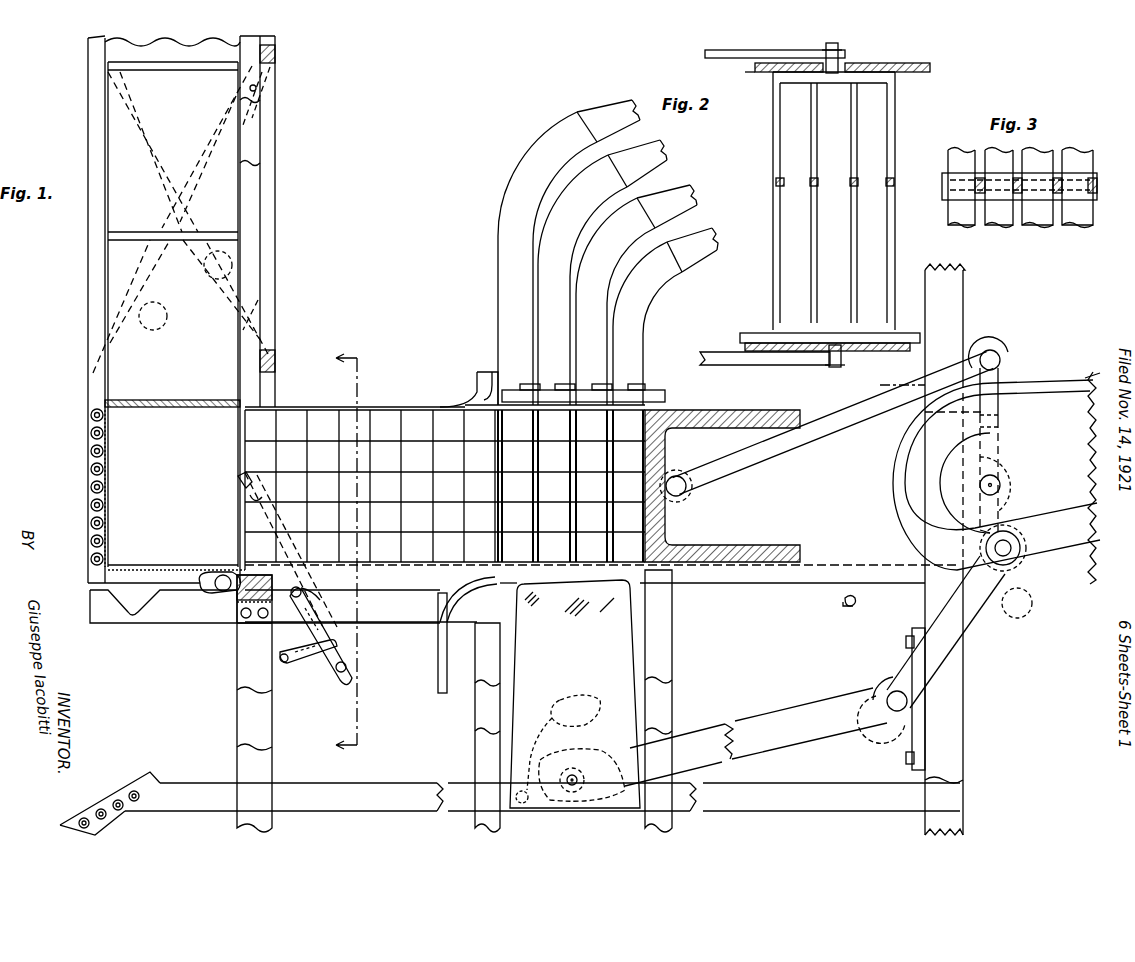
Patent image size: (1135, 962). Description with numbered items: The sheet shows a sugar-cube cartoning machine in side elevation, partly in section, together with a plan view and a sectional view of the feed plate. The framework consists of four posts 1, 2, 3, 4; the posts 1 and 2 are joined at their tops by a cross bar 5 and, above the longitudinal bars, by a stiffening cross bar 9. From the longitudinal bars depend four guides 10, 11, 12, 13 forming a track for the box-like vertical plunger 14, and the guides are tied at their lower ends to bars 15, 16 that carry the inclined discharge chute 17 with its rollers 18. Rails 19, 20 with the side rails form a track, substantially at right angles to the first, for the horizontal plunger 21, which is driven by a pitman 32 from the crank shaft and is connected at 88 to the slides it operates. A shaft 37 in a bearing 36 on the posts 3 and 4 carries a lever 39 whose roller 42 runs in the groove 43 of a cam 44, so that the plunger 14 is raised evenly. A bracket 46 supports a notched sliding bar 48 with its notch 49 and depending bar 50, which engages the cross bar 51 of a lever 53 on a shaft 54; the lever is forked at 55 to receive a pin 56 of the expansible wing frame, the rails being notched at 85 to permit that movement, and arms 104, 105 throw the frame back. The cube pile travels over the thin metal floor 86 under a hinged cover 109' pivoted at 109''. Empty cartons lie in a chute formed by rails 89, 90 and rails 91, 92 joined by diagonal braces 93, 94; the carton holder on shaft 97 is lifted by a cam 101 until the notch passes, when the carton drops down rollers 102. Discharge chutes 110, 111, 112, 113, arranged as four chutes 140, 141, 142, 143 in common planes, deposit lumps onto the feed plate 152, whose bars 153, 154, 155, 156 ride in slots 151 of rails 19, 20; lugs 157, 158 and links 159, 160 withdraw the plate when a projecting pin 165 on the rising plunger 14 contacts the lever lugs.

In FIG. 1, the post 1 is at (266, 334).
In FIG. 1, the post 2 is at (240, 670).
In FIG. 1, the post 3 is at (950, 762).
In FIG. 1, the post 4 is at (950, 700).
In FIG. 1, the cross bar 5 is at (277, 50).
In FIG. 1, the cross bar 9 is at (276, 364).
In FIG. 1, the guide 10 is at (480, 660).
In FIG. 1, the guide 11 is at (479, 700).
In FIG. 1, the guide 12 is at (672, 660).
In FIG. 1, the guide 13 is at (672, 694).
In FIG. 1, the vertical plunger 14 is at (672, 630).
In FIG. 1, the longitudinally extending bar 15 is at (456, 792).
In FIG. 1, the longitudinally extending bar 16 is at (365, 798).
In FIG. 1, the inclined chute 17 is at (120, 788).
In FIG. 1, the rollers 18 is at (100, 810).
In FIG. 1, the rail 19 is at (925, 340).
In FIG. 2, the rail 19 is at (905, 340).
In FIG. 1, the rail 20 is at (355, 542).
In FIG. 2, the rail 20 is at (915, 66).
In FIG. 1, the horizontal plunger 21 is at (792, 505).
In FIG. 1, the connection of slide to plunger 88 is at (808, 546).
In FIG. 1, the pitman 32 is at (866, 424).
In FIG. 1, the bearing 36 is at (912, 735).
In FIG. 1, the shaft 37 is at (893, 692).
In FIG. 1, the lever 39 is at (762, 722).
In FIG. 1, the roller 42 is at (1017, 603).
In FIG. 1, the groove 43 is at (1053, 393).
In FIG. 1, the cam 44 is at (987, 616).
In FIG. 1, the bracket 46 is at (238, 610).
In FIG. 1, the sliding bar 48 is at (720, 578).
In FIG. 1, the notch 49 is at (125, 620).
In FIG. 1, the depending bar 50 is at (440, 666).
In FIG. 1, the cross bar 51 is at (350, 668).
In FIG. 1, the lever 53 is at (332, 658).
In FIG. 1, the shaft 54 is at (318, 601).
In FIG. 1, the fork 55 is at (260, 497).
In FIG. 1, the pin 56 is at (240, 478).
In FIG. 1, the notch 85 is at (368, 566).
In FIG. 1, the thin metal floor 86 is at (416, 567).
In FIG. 1, the rail 89 is at (262, 87).
In FIG. 1, the rail 90 is at (262, 132).
In FIG. 1, the rail 91 is at (92, 205).
In FIG. 1, the rail 92 is at (88, 290).
In FIG. 1, the diagonal brace 93 is at (140, 300).
In FIG. 1, the diagonal brace 94 is at (218, 265).
In FIG. 1, the shaft 97 is at (224, 575).
In FIG. 1, the cam 101 is at (205, 580).
In FIG. 1, the rollers 102 is at (88, 450).
In FIG. 1, the arm 104 is at (285, 664).
In FIG. 1, the arm 105 is at (308, 658).
In FIG. 1, the hinged cover 109' is at (436, 389).
In FIG. 1, the pivot of hinged cover 109'' is at (473, 373).
In FIG. 1, the discharge chute 110 is at (547, 258).
In FIG. 1, the discharge chute 111 is at (582, 280).
In FIG. 1, the discharge chute 112 is at (615, 301).
In FIG. 1, the discharge chute 113 is at (647, 323).
In FIG. 1, the chute 140 is at (610, 118).
In FIG. 1, the chute 141 is at (640, 168).
In FIG. 1, the chute 142 is at (668, 212).
In FIG. 1, the chute 143 is at (696, 256).
In FIG. 2, the slot 151 is at (845, 80).
In FIG. 2, the feed plate 152 is at (896, 82).
In FIG. 2, the feed plate bar 153 is at (775, 132).
In FIG. 3, the feed plate bar 153 is at (975, 183).
In FIG. 2, the feed plate bar 154 is at (812, 157).
In FIG. 3, the feed plate bar 154 is at (1010, 190).
In FIG. 2, the feed plate bar 155 is at (875, 128).
In FIG. 3, the feed plate bar 155 is at (1053, 190).
In FIG. 2, the feed plate bar 156 is at (892, 136).
In FIG. 3, the feed plate bar 156 is at (1097, 186).
In FIG. 2, the lug 157 is at (838, 48).
In FIG. 2, the lug 158 is at (840, 366).
In FIG. 2, the link 159 is at (738, 58).
In FIG. 2, the link 160 is at (720, 352).
In FIG. 1, the projecting pin 165 is at (570, 749).